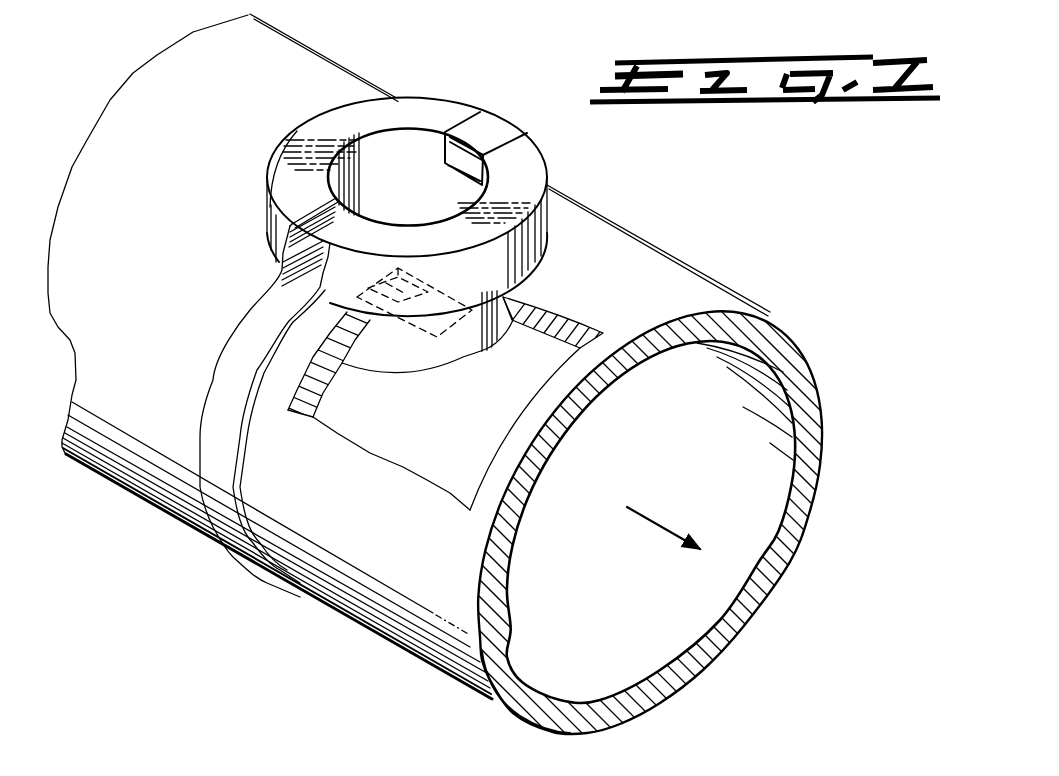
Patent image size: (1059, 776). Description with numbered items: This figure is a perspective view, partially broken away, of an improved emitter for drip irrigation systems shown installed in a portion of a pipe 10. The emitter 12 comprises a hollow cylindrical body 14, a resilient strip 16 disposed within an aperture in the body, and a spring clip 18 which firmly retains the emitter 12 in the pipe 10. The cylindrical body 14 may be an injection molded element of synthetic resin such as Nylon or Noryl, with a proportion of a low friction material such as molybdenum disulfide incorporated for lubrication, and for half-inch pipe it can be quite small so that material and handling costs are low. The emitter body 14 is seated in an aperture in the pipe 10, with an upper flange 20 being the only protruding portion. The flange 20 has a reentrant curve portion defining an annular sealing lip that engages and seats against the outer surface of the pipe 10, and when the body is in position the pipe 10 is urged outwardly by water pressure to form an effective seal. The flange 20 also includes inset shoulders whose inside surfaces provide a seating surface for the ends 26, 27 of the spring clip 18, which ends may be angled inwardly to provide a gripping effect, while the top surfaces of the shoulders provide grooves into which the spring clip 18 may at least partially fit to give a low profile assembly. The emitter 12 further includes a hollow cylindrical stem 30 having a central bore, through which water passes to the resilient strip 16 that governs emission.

The pipe 10 is at (688, 279).
The emitter 12 is at (378, 181).
The hollow cylindrical body 14 is at (368, 353).
The resilient strip 16 is at (437, 337).
The spring clip 18 is at (240, 325).
The upper flange 20 is at (322, 122).
The end of the spring clip 26 is at (318, 224).
The end of the spring clip 27 is at (490, 135).
The hollow cylindrical stem 30 is at (390, 152).